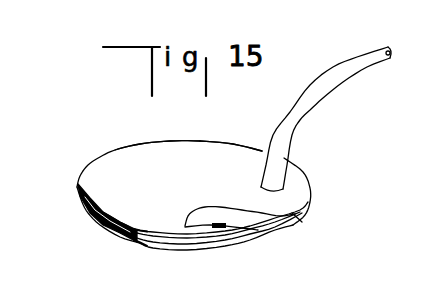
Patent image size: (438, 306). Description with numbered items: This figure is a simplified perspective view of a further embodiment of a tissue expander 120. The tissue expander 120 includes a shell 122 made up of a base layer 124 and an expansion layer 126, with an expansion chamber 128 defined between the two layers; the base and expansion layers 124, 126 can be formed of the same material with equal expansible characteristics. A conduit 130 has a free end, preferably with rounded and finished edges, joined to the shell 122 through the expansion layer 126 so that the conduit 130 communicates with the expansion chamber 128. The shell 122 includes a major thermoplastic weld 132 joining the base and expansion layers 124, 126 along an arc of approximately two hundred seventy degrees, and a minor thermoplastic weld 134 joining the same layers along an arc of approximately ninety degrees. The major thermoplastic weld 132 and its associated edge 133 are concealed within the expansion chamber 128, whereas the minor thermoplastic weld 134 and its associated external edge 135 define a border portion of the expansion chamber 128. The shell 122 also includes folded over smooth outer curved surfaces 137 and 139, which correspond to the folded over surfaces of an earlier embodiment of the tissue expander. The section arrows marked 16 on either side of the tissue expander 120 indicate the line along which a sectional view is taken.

The section line 16- 16 is at (59, 240).
The tissue expander 120 is at (136, 146).
The shell 122 is at (157, 145).
The base layer 124 is at (257, 245).
The expansion layer 126 is at (222, 147).
The expansion chamber 128 is at (296, 220).
The conduit 130 is at (333, 78).
The major thermoplastic weld 132 is at (188, 251).
The edge 133 is at (222, 248).
The minor thermoplastic weld 134 is at (104, 212).
The external edge 135 is at (78, 184).
The folded over smooth outer curved surface 137 is at (134, 238).
The folded over smooth outer curved surface 139 is at (148, 248).